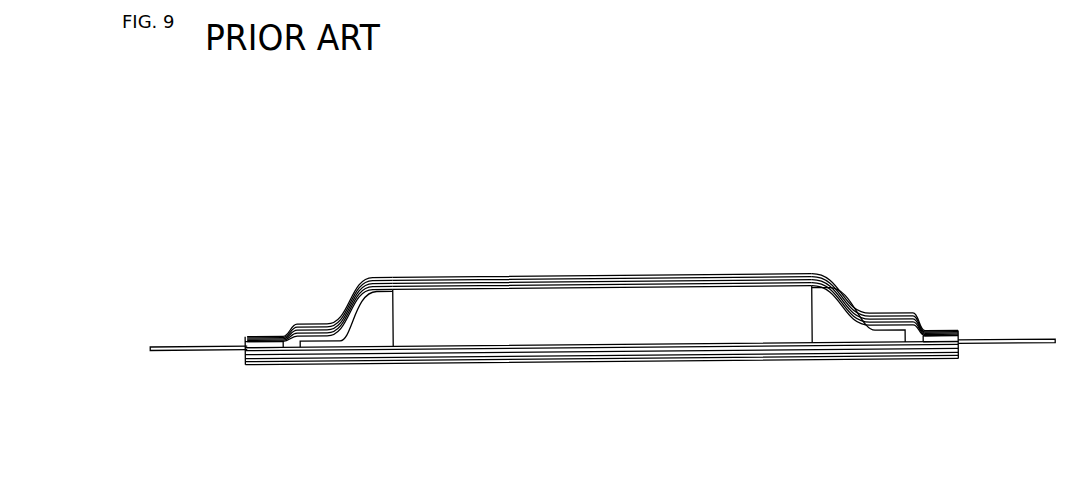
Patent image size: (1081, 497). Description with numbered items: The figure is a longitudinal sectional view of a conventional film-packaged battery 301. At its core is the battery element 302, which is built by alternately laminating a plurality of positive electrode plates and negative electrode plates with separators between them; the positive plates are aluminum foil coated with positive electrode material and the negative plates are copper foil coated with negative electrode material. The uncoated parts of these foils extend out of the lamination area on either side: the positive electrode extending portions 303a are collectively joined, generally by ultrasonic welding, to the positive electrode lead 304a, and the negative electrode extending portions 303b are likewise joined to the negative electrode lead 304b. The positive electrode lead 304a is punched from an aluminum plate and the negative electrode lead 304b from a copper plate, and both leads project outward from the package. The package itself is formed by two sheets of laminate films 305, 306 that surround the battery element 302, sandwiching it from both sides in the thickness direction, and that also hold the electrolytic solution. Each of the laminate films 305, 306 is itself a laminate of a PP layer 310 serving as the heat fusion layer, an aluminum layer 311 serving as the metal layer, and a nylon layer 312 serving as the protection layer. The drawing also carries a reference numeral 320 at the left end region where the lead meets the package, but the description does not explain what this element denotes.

The film-packaged battery 301 is at (859, 273).
The battery element 302 is at (567, 300).
The positive electrode extending portions 303a is at (353, 285).
The negative electrode extending portions 303b is at (825, 280).
The positive electrode lead 304a is at (188, 343).
The negative electrode lead 304b is at (1023, 338).
The laminate film 305 is at (877, 306).
The laminate film 306 is at (658, 362).
The PP layer 310 is at (243, 352).
The aluminum layer 311 is at (243, 357).
The nylon layer 312 is at (243, 362).
The terminal block 320 is at (263, 341).